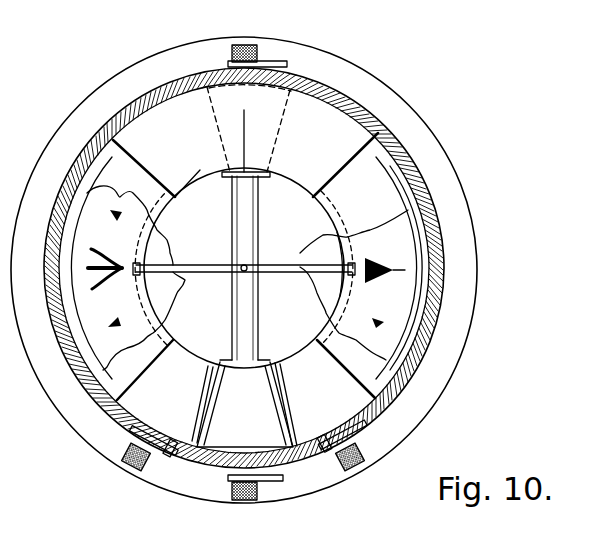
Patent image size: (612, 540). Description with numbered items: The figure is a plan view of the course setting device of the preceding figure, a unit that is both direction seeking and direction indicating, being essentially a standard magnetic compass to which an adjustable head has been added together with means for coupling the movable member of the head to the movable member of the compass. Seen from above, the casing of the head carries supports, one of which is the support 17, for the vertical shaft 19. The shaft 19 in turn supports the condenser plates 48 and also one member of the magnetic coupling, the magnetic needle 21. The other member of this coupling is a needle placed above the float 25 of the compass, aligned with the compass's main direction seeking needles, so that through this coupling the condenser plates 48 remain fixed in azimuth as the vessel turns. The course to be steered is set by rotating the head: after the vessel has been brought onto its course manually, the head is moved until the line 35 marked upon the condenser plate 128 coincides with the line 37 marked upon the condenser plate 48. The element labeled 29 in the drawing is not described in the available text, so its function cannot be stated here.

The condenser plate 128 is at (339, 123).
The condenser plates 48 is at (200, 112).
The line 35 is at (246, 135).
The line 37 is at (240, 199).
The support 17 is at (261, 241).
The vertical shaft 19 is at (243, 272).
The magnetic needle 21 is at (288, 283).
The float 25 is at (160, 292).
The flap with arrow 29 is at (353, 244).